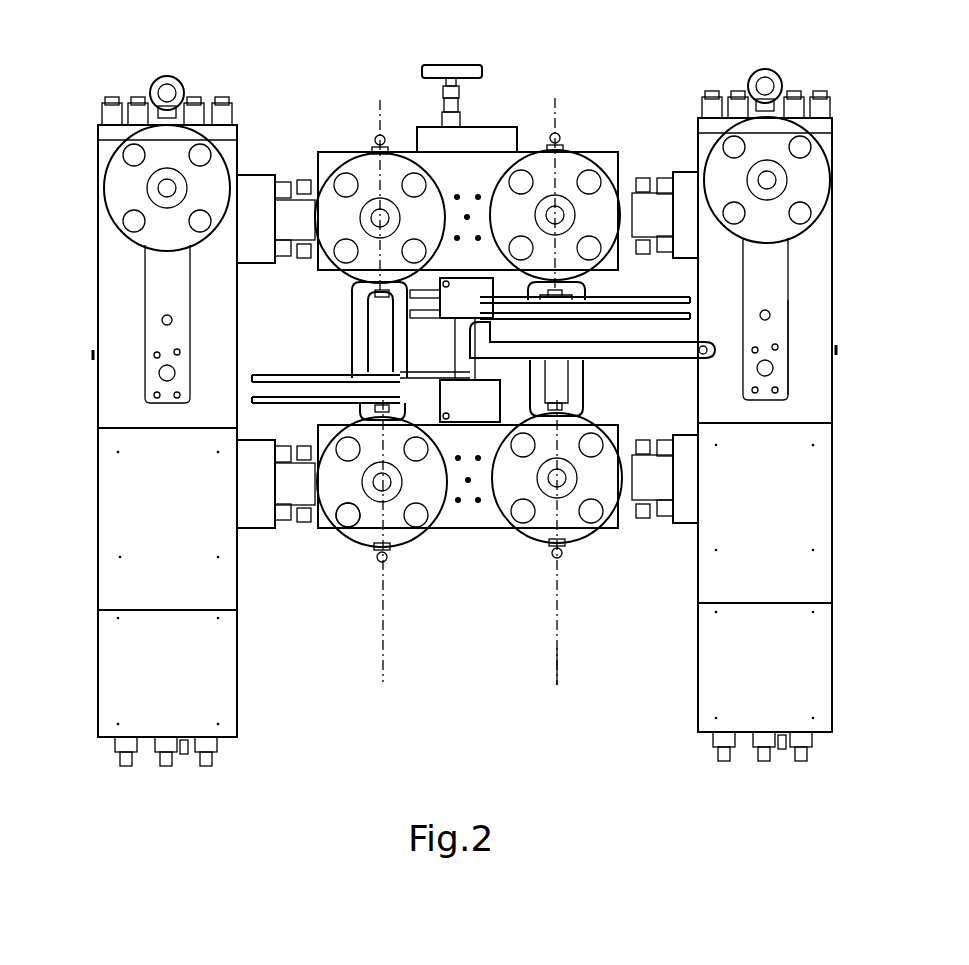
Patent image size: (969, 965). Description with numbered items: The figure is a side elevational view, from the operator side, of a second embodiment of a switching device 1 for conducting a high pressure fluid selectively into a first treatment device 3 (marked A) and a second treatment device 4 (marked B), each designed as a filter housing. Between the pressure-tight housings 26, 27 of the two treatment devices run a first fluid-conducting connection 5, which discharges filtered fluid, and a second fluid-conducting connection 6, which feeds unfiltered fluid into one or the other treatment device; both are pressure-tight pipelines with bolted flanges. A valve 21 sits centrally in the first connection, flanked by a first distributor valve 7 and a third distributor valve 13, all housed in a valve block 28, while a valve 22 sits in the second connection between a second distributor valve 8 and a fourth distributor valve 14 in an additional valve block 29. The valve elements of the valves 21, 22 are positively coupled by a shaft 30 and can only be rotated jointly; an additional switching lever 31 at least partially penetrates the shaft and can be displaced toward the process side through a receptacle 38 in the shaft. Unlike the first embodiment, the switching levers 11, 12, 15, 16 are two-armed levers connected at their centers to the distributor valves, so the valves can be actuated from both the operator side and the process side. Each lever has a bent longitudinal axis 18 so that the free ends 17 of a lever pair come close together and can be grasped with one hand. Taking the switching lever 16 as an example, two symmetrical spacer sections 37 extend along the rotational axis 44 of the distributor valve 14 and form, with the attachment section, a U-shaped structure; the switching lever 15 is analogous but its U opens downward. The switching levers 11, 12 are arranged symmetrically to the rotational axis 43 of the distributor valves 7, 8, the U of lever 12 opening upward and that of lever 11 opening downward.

The switching device 1 is at (338, 726).
The first treatment device 3 is at (250, 652).
The second treatment device 4 is at (693, 618).
The first fluid-conducting connection 5 is at (290, 208).
The second fluid-conducting connection 6 is at (293, 490).
The first distributor valve 7 is at (372, 172).
The second distributor valve 8 is at (375, 522).
The switching lever 11 is at (300, 375).
The switching lever 12 is at (298, 397).
The third distributor valve 13 is at (570, 172).
The fourth distributor valve 14 is at (565, 520).
The switching lever 15 is at (700, 300).
The switching lever 16 is at (700, 348).
The free ends 17 is at (692, 318).
The longitudinal axis 18 is at (560, 286).
The valve 21 is at (483, 182).
The valve 22 is at (465, 515).
The pressure-tight housing 26 is at (122, 272).
The pressure-tight housing 27 is at (818, 243).
The valve block 28 is at (598, 148).
The valve block 29 is at (343, 541).
The shaft 30 is at (398, 360).
The additional switching lever 31 is at (790, 368).
The spacer sections 37 is at (420, 306).
The receptacle 38 is at (496, 300).
The rotational axis 43 is at (383, 648).
The rotational axis 44 is at (557, 663).